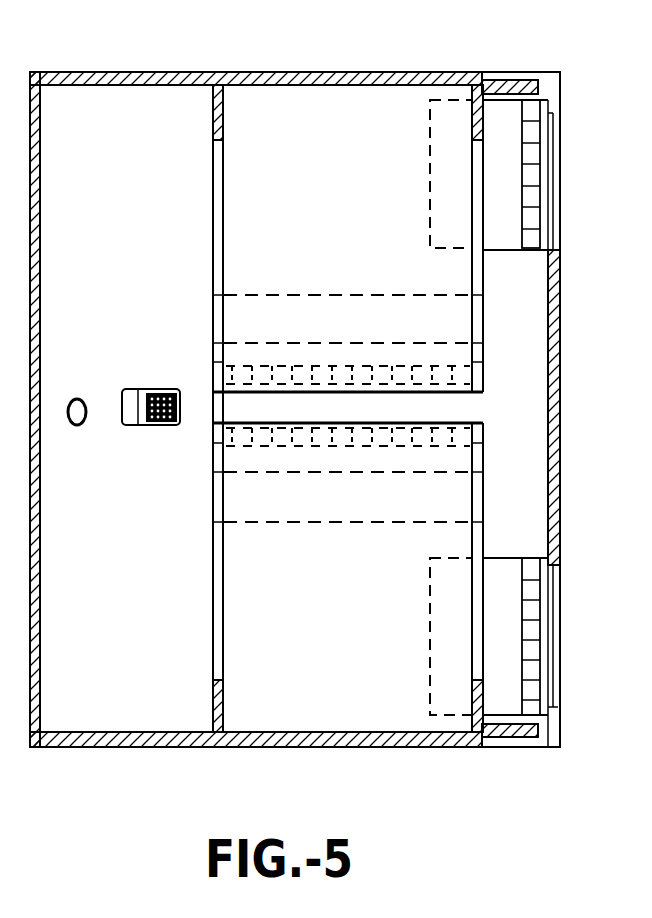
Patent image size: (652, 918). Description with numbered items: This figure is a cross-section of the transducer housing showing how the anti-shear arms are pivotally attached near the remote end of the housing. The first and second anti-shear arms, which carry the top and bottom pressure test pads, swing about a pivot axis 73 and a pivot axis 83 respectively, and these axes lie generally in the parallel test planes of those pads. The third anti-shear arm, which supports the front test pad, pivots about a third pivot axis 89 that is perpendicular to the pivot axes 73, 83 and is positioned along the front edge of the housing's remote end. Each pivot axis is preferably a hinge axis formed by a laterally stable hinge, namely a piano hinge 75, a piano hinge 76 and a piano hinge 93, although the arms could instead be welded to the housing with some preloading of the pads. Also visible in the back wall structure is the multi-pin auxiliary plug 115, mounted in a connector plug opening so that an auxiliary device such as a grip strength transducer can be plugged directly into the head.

The third pivot axis 89 is at (541, 82).
The piano hinge 93 is at (535, 206).
The piano hinge 75 is at (432, 367).
The pivot axis 73 is at (486, 376).
The piano hinge 76 is at (458, 428).
The pivot axis 83 is at (486, 440).
The multi-pin auxiliary plug 115 is at (132, 410).